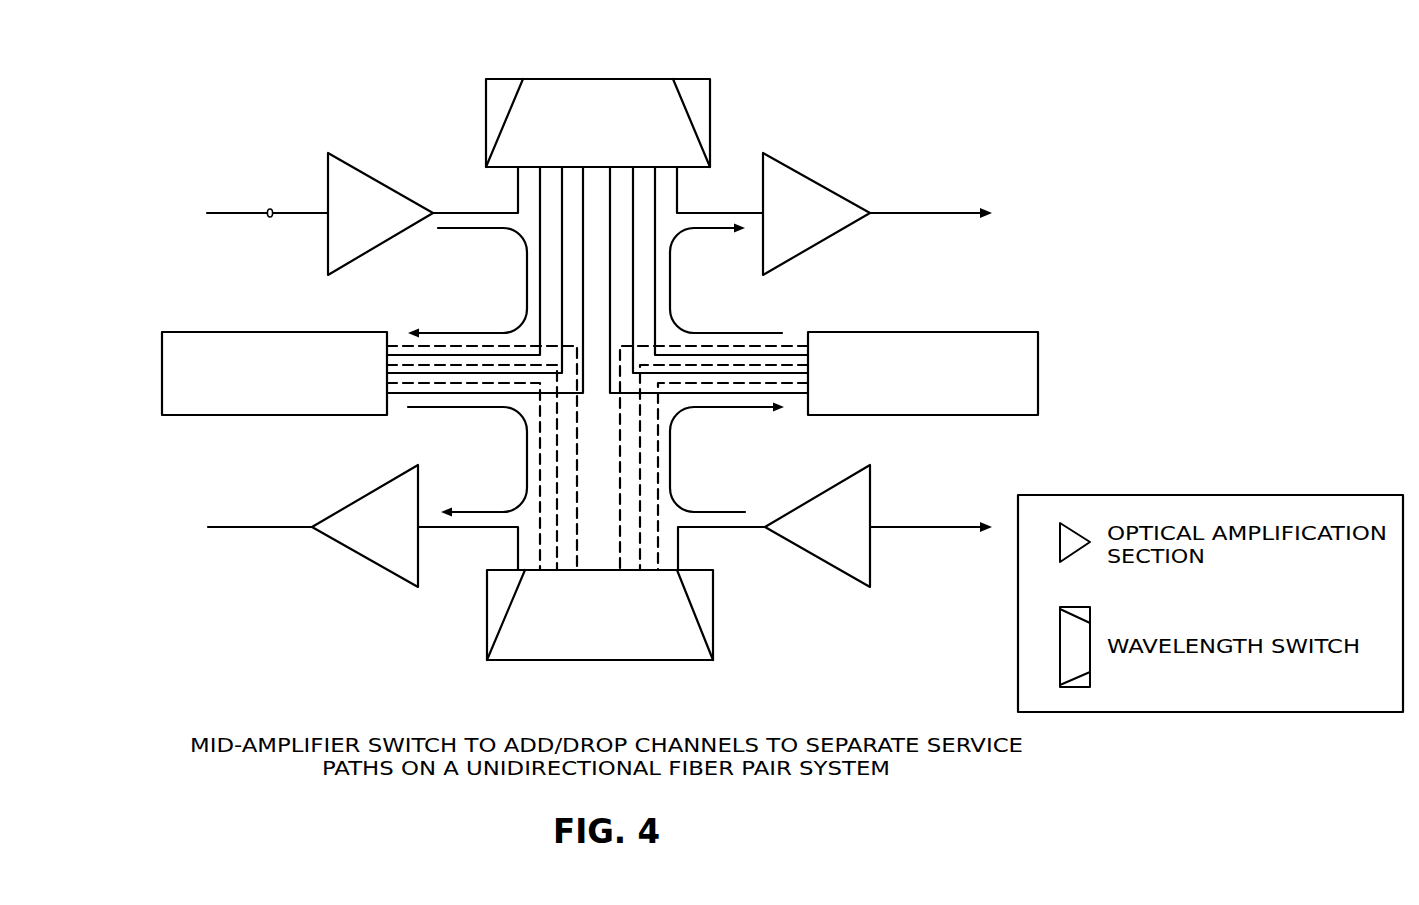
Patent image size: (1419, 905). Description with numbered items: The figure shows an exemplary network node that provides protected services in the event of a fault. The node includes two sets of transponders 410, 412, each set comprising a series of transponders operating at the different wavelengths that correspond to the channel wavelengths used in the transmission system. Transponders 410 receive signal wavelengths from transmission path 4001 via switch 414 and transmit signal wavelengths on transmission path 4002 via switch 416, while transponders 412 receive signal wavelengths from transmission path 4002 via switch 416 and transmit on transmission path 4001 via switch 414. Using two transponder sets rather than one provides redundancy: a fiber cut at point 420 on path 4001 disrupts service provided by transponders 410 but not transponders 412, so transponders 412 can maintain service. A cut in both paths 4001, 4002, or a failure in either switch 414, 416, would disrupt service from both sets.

The transmission path 4001 is at (236, 213).
The transmission path 4002 is at (257, 527).
The transponders 410 is at (162, 372).
The transponders 412 is at (1038, 369).
The switch 414 is at (598, 79).
The switch 416 is at (487, 628).
The point 420 is at (270, 219).